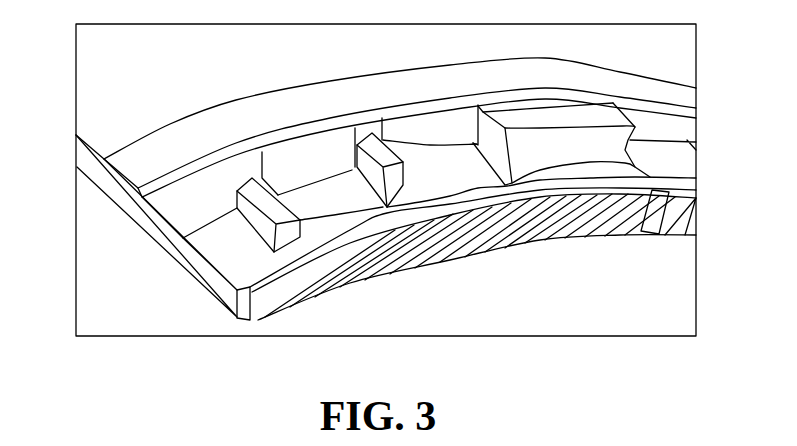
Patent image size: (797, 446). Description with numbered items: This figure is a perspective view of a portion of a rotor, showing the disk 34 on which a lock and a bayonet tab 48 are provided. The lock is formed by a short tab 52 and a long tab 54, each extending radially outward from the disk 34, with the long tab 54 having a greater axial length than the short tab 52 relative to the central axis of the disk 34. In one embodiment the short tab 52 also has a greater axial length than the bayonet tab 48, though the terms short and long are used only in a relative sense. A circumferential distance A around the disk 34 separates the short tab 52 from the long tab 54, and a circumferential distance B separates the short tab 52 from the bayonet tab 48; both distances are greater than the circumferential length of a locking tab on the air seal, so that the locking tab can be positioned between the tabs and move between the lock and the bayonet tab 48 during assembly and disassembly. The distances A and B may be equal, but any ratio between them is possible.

The disk 34 is at (148, 125).
The bayonet tab 48 is at (583, 117).
The short tab 52 is at (387, 155).
The long tab 54 is at (283, 212).
The circumferential distance A is at (293, 145).
The circumferential distance B is at (437, 114).